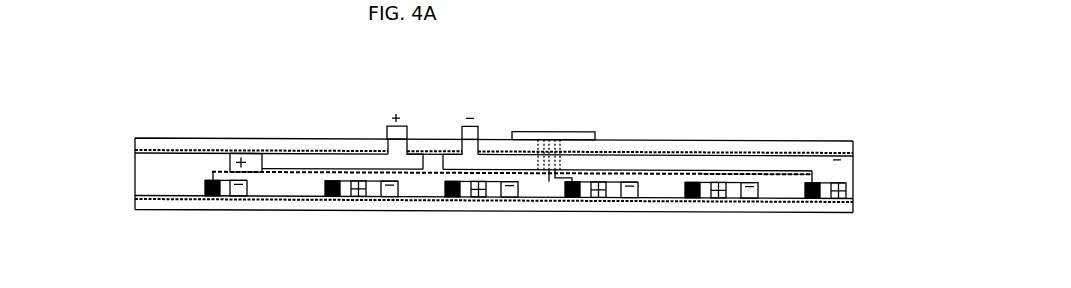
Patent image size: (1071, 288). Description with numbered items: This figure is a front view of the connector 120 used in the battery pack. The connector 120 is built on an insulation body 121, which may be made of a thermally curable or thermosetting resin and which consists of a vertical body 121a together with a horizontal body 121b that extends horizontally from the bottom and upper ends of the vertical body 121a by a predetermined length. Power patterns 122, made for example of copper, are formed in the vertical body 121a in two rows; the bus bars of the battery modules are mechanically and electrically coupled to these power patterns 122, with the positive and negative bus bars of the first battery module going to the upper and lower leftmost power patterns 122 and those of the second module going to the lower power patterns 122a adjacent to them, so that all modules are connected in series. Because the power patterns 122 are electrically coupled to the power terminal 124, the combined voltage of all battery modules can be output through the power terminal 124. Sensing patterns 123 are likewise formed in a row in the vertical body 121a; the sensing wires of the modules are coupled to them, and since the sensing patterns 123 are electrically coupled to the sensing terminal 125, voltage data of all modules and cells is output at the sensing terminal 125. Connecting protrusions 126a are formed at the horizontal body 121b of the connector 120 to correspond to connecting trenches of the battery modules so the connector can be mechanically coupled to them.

The connector 120 is at (718, 87).
The insulation body 121 is at (66, 142).
The vertical body 121a is at (135, 172).
The horizontal body 121b is at (135, 143).
The power patterns 122 is at (247, 184).
The lower power patterns 122a is at (389, 192).
The sensing patterns 123 is at (216, 172).
The power terminal 124 is at (467, 125).
The sensing terminal 125 is at (573, 130).
The connecting protrusions 126a is at (797, 200).